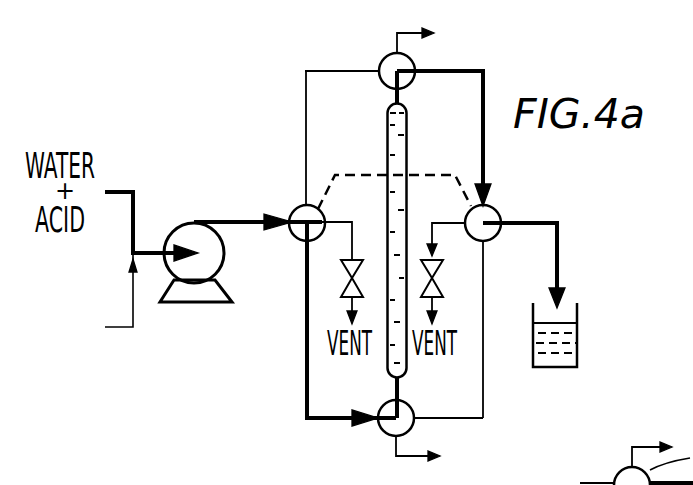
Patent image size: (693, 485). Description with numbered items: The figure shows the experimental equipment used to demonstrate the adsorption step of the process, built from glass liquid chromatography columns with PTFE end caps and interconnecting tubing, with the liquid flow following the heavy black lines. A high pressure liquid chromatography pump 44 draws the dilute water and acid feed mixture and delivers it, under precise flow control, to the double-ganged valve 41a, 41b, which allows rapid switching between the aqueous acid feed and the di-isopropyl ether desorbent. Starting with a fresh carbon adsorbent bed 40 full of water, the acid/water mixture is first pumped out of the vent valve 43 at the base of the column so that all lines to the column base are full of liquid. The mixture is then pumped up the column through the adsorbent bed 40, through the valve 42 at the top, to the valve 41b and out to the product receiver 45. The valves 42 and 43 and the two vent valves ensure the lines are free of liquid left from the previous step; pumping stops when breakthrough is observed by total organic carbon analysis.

The carbon adsorbent bed 40 is at (407, 126).
The double-ganged valve 41a is at (297, 209).
The double-ganged valve 41b is at (497, 211).
The valve 42 is at (414, 55).
The vent valve 43 is at (380, 432).
The pump 44 is at (225, 255).
The product receiver 45 is at (577, 338).